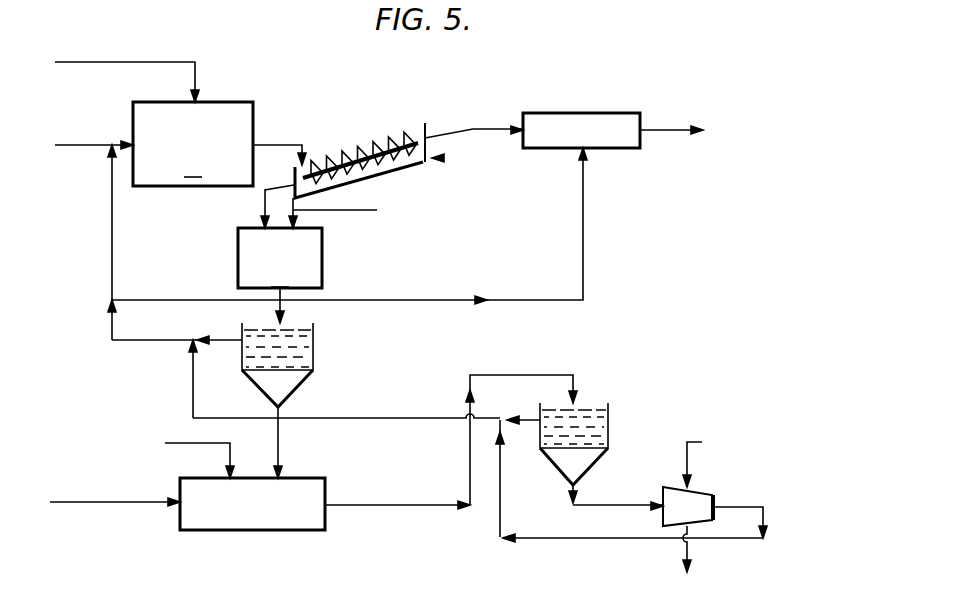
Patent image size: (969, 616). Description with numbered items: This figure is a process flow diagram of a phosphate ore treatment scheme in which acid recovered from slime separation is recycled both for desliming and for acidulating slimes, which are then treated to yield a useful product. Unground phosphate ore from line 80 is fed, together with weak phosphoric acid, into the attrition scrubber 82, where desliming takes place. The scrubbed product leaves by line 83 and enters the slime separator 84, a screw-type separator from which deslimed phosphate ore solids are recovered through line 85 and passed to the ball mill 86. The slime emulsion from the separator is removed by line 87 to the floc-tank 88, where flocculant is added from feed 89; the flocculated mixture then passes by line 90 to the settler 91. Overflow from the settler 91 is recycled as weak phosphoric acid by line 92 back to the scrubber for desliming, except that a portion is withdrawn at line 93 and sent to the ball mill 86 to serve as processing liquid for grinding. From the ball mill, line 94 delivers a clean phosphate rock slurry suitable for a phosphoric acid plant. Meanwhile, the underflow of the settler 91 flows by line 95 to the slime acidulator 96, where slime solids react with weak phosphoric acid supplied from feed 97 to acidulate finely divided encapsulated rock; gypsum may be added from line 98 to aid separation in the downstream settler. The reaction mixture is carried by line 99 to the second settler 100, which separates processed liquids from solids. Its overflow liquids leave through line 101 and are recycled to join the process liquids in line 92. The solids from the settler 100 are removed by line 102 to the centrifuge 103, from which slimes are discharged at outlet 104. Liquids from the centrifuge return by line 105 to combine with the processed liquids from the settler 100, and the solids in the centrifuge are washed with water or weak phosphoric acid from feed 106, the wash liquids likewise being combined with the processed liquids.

The phosphate ore line 80 is at (184, 63).
The attrition scrubber 82 is at (193, 144).
The scrubber product line 83 is at (270, 144).
The slime separator 84 is at (434, 158).
The deslimed ore line 85 is at (445, 133).
The ball mill 86 is at (563, 112).
The slime emulsion line 87 is at (110, 138).
The floc-tank 88 is at (280, 243).
The flocculant feed 89 is at (350, 213).
The flocculated mixture line 90 is at (283, 296).
The settler 91 is at (313, 363).
The recycle acid line 92 is at (111, 330).
The ball mill liquid line 93 is at (397, 302).
The clean rock slurry line 94 is at (661, 132).
The settler underflow line 95 is at (278, 445).
The slime acidulator 96 is at (292, 531).
The weak phosphoric acid feed 97 is at (85, 505).
The gypsum line 98 is at (230, 458).
The reaction mixture line 99 is at (358, 507).
The settler 100 is at (600, 422).
The overflow line 101 is at (394, 398).
The settler solids line 102 is at (598, 507).
The centrifuge 103 is at (705, 488).
The slimes outlet 104 is at (690, 545).
The centrifuge liquid recycle line 105 is at (763, 515).
The wash liquid feed 106 is at (688, 441).